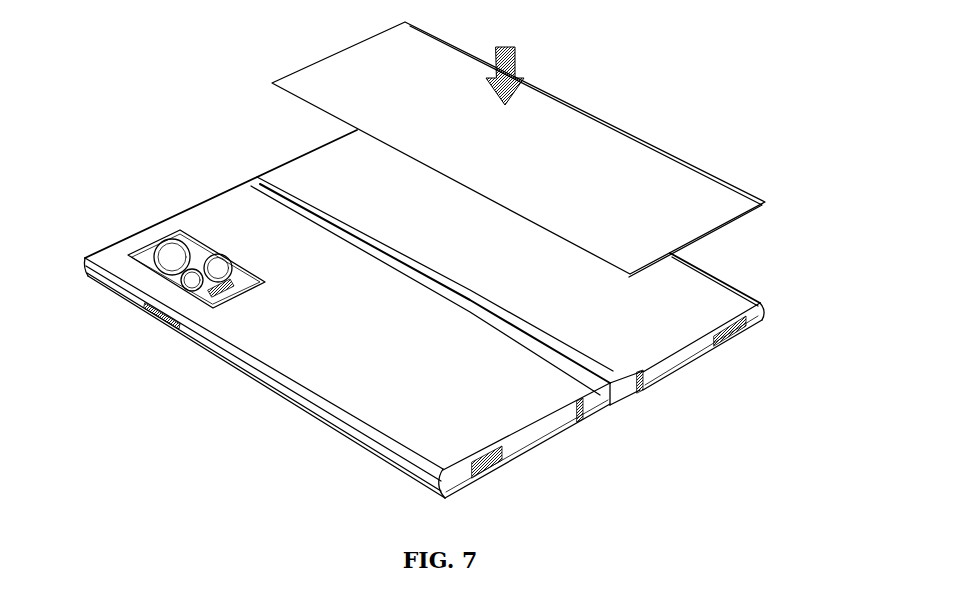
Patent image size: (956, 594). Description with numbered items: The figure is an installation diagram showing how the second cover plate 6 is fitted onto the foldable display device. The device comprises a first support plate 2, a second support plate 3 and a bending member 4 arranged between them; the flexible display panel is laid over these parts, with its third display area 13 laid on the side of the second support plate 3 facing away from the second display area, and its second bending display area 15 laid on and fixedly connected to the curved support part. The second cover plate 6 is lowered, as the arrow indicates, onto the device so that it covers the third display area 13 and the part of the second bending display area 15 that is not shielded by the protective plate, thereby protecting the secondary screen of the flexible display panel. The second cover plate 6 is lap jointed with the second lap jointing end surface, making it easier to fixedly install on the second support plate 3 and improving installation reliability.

The first support plate 2 is at (535, 427).
The second support plate 3 is at (670, 358).
The bending member 4 is at (615, 398).
The second cover plate 6 is at (582, 138).
The third display area 13 is at (680, 297).
The second bending display area 15 is at (738, 290).